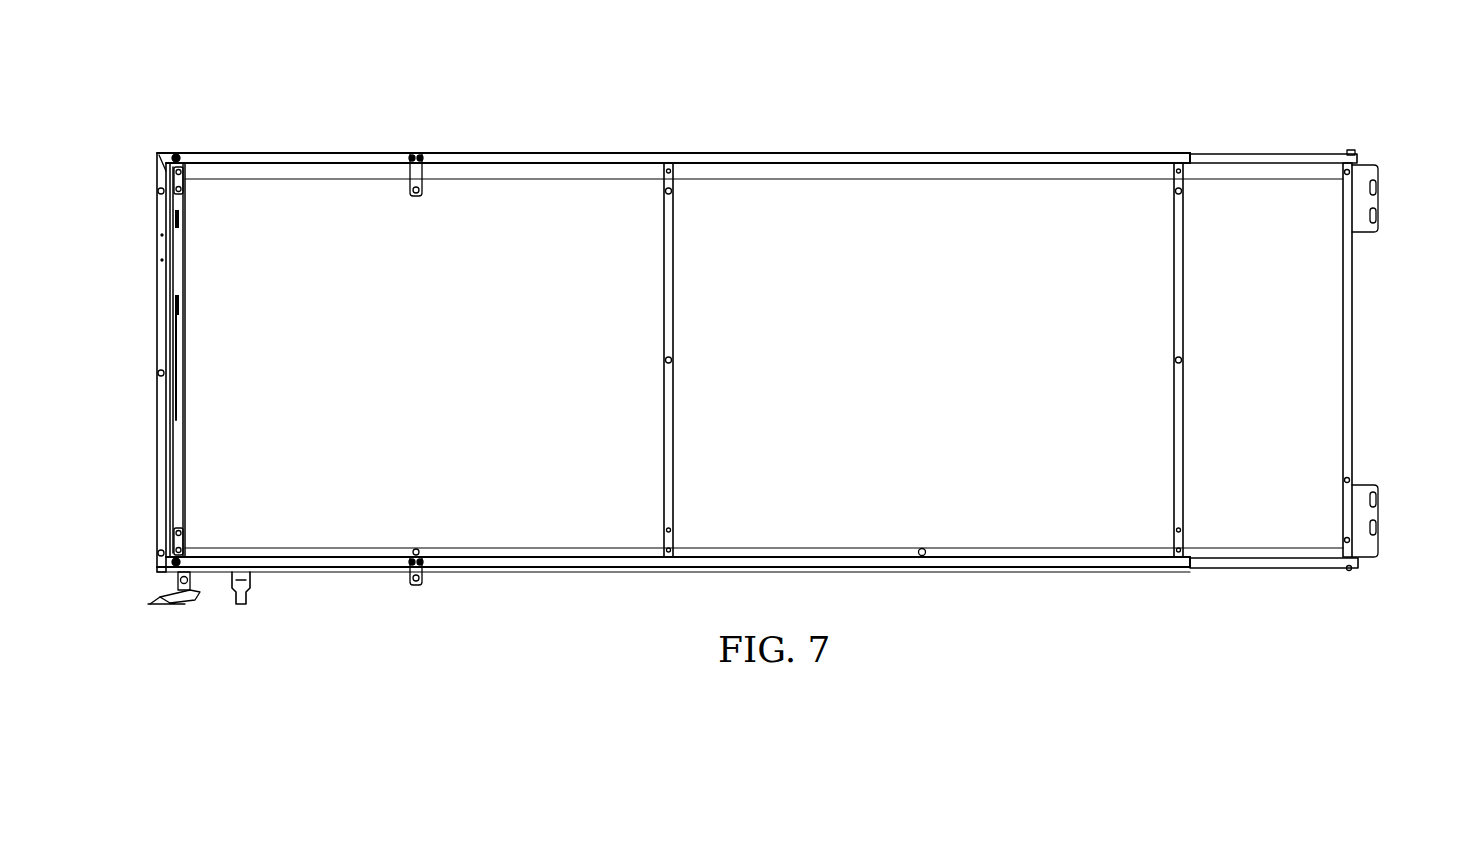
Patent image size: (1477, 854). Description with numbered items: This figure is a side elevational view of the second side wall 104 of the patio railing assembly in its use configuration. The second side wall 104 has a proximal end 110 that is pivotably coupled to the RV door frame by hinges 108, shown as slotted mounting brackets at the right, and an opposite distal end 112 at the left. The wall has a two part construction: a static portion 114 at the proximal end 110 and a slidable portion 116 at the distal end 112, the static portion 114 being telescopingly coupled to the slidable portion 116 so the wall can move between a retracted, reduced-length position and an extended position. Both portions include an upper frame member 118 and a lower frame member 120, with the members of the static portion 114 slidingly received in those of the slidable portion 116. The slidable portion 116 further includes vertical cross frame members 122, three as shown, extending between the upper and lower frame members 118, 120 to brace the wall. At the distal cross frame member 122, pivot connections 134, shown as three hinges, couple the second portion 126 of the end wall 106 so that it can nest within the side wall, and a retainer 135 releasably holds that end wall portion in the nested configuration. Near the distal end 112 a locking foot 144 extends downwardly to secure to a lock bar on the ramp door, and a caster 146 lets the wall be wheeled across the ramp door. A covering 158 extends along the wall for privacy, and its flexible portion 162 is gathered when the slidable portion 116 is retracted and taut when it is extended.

The second side wall 104 is at (822, 74).
The end wall 106 is at (177, 410).
The hinges 108 is at (1379, 198).
The proximal end 110 is at (1348, 152).
The distal end 112 is at (157, 201).
The static portion 114 is at (1258, 152).
The slidable portion 116 is at (1052, 152).
The upper frame member 118 is at (520, 152).
The lower frame member 120 is at (361, 573).
The cross frame members 122 is at (158, 318).
The second portion of end wall 126 is at (177, 466).
The pivot connections 134 is at (174, 222).
The retainer 135 is at (422, 586).
The locking foot 144 is at (166, 606).
The caster 146 is at (243, 606).
The covering 158 is at (840, 536).
The flexible portion 162 is at (1247, 536).